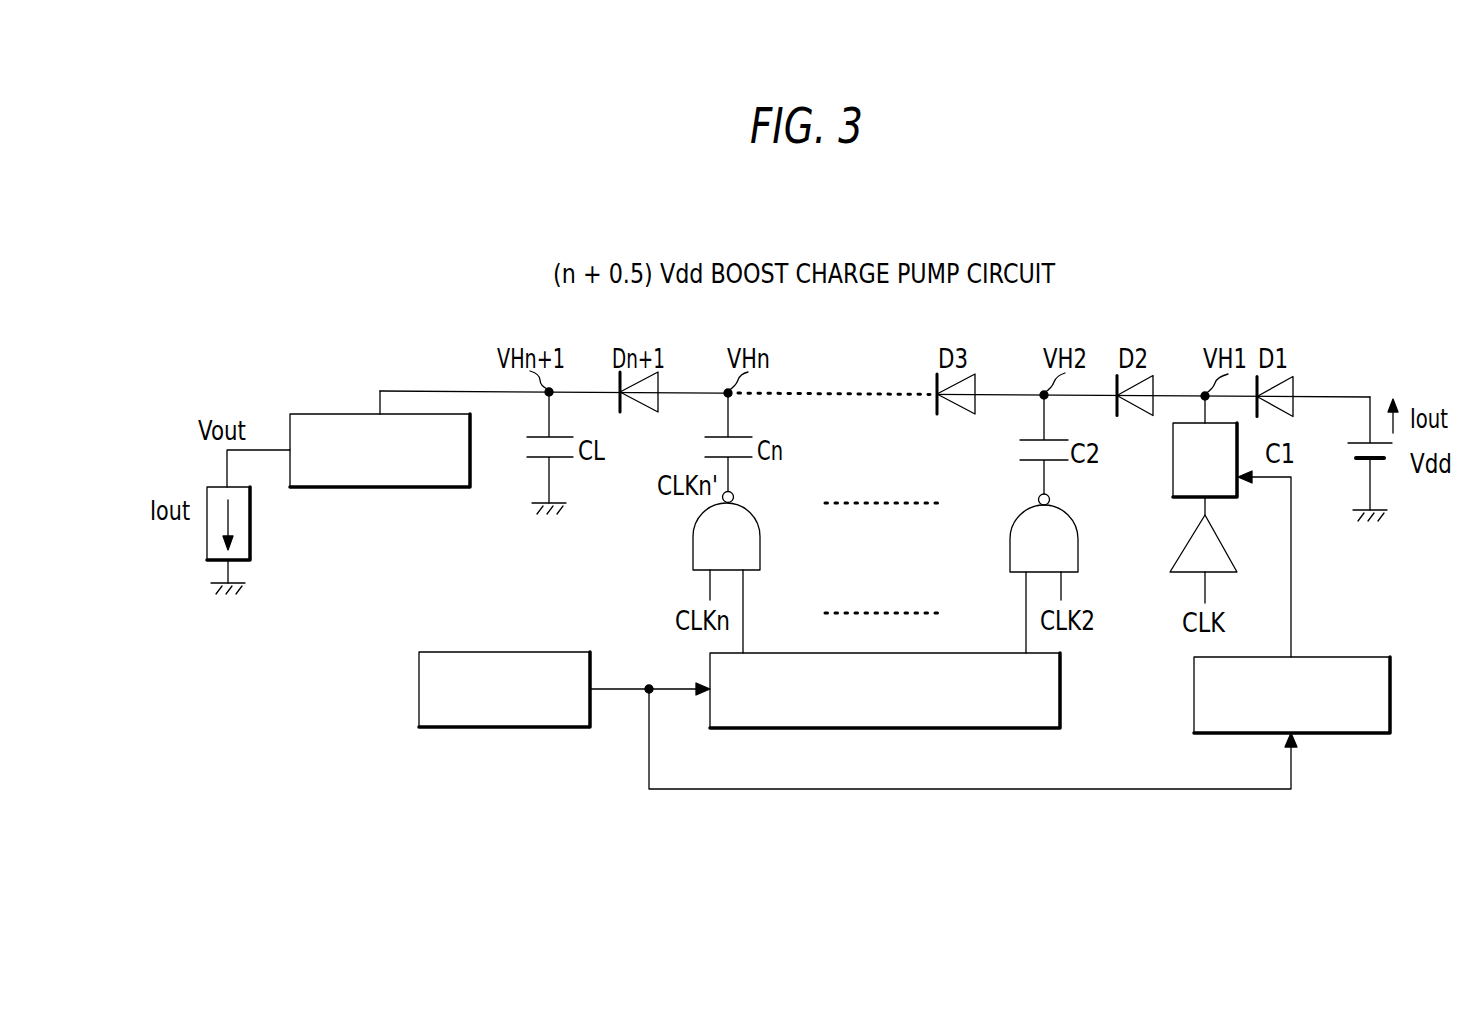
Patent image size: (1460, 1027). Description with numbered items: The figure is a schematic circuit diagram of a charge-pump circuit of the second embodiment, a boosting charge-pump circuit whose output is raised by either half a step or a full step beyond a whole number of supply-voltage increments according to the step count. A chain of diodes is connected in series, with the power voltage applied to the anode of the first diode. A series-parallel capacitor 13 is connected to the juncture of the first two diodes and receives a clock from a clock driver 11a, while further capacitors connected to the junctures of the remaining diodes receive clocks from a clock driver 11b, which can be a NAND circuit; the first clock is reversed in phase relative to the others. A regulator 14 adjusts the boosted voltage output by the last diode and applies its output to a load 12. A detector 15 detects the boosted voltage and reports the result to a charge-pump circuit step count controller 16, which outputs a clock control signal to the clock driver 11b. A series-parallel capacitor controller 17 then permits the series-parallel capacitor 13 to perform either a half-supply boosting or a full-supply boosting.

The clock driver 11a is at (1252, 537).
The clock driver 11b is at (760, 522).
The load 12 is at (250, 520).
The series-parallel capacitor 13 is at (1173, 462).
The regulator 14 is at (320, 413).
The detector 15 is at (505, 651).
The charge-pump circuit step count controller 16 is at (1060, 692).
The series-parallel capacitor controller 17 is at (1390, 692).